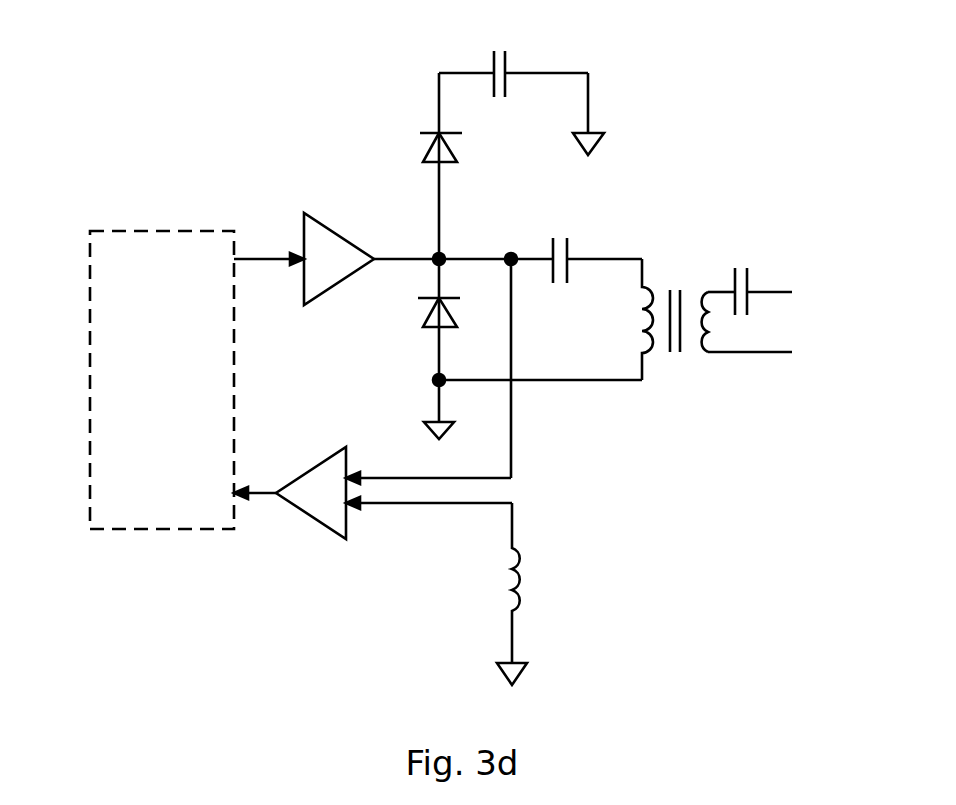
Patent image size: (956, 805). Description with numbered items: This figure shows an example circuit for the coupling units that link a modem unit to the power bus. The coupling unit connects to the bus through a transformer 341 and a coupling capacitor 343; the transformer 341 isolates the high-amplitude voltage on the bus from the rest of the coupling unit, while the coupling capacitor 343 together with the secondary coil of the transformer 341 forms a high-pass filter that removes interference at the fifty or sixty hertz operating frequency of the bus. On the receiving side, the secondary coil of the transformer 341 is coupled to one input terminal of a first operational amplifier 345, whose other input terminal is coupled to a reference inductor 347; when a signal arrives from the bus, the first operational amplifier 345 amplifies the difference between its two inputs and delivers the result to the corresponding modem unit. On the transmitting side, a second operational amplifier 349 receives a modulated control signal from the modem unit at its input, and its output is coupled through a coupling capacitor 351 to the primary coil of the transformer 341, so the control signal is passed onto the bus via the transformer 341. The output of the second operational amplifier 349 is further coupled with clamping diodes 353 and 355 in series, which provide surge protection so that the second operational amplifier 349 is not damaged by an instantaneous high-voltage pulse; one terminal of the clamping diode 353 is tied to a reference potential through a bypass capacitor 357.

The transformer 341 is at (684, 263).
The coupling capacitor 343 is at (749, 272).
The first operational amplifier 345 is at (346, 525).
The reference inductor 347 is at (530, 591).
The second operational amplifier 349 is at (302, 238).
The coupling capacitor 351 is at (568, 236).
The clamping diode 353 is at (427, 151).
The clamping diode 355 is at (430, 335).
The bypass capacitor 357 is at (507, 62).